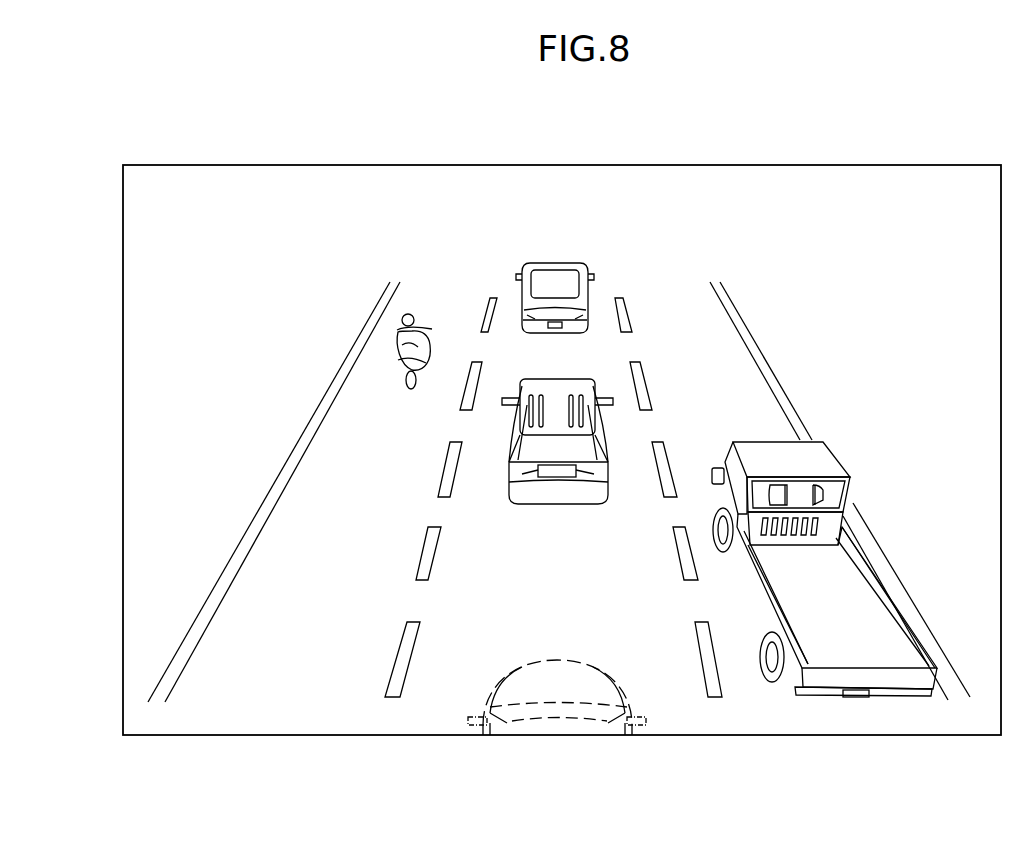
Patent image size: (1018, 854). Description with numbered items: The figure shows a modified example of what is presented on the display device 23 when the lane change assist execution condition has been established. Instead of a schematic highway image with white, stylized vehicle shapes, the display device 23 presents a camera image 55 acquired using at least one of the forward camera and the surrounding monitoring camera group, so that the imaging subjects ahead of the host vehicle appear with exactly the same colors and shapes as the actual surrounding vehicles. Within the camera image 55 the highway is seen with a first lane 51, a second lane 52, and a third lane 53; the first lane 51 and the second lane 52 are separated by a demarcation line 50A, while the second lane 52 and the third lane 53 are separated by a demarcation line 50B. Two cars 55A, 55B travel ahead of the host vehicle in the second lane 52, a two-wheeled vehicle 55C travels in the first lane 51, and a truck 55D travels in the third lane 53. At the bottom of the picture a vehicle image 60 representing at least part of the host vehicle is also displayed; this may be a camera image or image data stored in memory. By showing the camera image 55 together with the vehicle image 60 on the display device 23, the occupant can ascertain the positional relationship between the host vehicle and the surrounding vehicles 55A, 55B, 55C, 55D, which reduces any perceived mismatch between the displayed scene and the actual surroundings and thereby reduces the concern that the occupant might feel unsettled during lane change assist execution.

The display device 23 is at (812, 165).
The camera image 55 is at (562, 415).
The first lane 51 is at (412, 302).
The second lane 52 is at (421, 453).
The third lane 53 is at (758, 397).
The demarcation line 50A is at (424, 553).
The demarcation line 50B is at (704, 622).
The car 55A is at (548, 502).
The car 55B is at (570, 265).
The two-wheeled vehicle 55C is at (400, 380).
The truck 55D is at (837, 695).
The vehicle image 60 is at (557, 728).